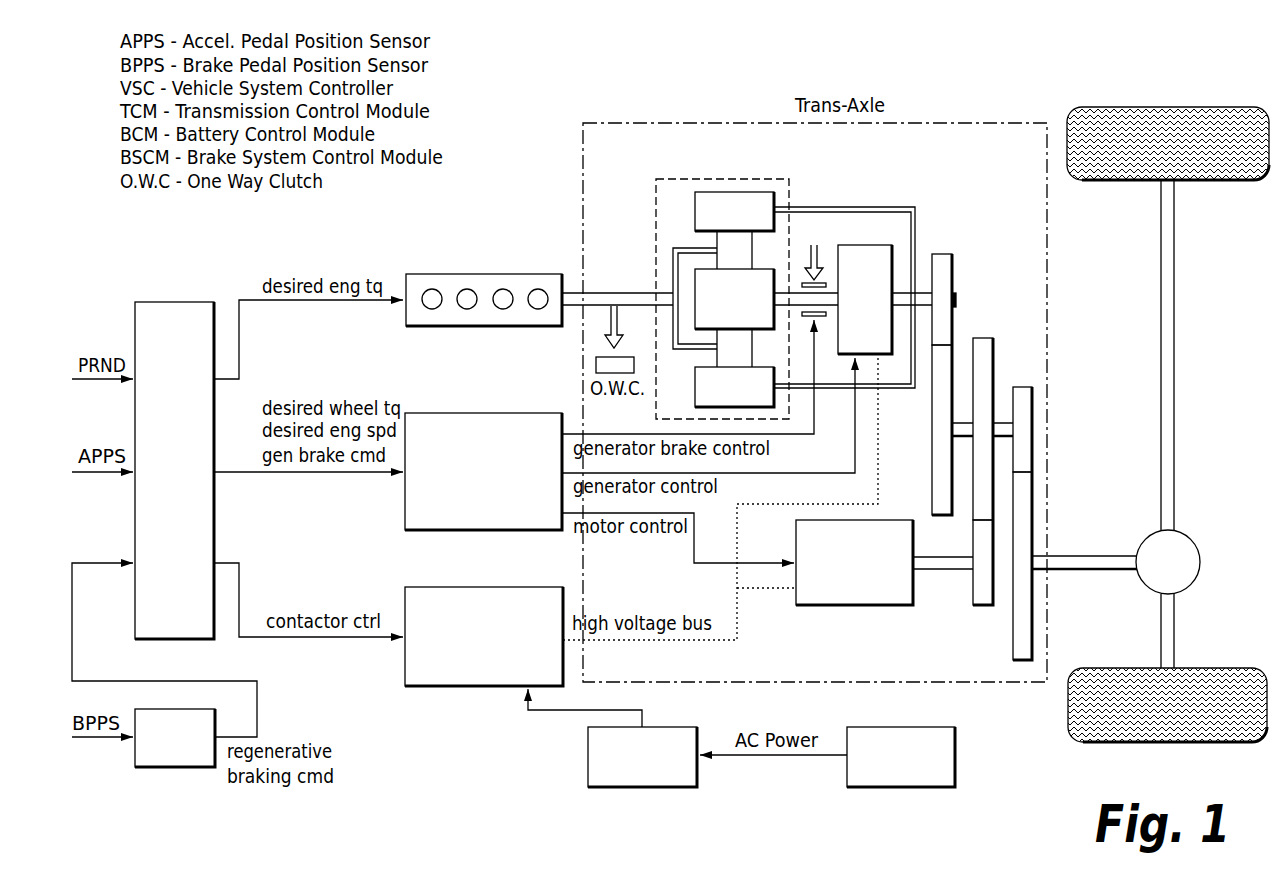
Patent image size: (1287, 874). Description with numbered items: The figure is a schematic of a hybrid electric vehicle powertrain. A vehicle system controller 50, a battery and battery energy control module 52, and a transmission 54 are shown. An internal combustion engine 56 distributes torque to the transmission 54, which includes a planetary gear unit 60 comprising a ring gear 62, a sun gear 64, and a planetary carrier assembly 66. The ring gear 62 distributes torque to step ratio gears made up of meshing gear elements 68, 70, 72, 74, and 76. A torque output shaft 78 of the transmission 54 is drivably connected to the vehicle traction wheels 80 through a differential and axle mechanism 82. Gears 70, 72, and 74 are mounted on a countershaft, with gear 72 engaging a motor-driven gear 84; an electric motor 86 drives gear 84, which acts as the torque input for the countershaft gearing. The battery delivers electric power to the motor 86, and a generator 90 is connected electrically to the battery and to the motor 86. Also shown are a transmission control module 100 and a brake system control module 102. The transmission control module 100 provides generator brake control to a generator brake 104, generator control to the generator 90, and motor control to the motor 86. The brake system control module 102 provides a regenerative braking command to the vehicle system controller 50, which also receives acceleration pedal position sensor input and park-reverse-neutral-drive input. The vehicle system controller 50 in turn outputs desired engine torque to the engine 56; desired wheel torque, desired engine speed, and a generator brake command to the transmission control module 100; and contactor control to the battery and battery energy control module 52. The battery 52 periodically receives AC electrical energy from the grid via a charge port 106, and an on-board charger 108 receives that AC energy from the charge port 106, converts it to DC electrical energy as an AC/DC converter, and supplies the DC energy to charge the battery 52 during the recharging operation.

The vehicle system controller 50 is at (175, 302).
The battery and battery energy control module 52 is at (483, 688).
The transmission 54 is at (928, 123).
The internal combustion engine 56 is at (410, 274).
The planetary gear unit 60 is at (789, 195).
The ring gear 62 is at (695, 210).
The sun gear 64 is at (695, 283).
The planetary carrier assembly 66 is at (686, 248).
The meshing gear element 68 is at (952, 268).
The meshing gear element 70 is at (931, 403).
The meshing gear element 72 is at (993, 355).
The meshing gear element 74 is at (1033, 430).
The meshing gear element 76 is at (1033, 523).
The torque output shaft 78 is at (1090, 573).
The vehicle traction wheels 80 is at (1213, 181).
The differential and axle mechanism 82 is at (1188, 538).
The motor-driven gear 84 is at (973, 588).
The electric motor 86 is at (855, 607).
The generator 90 is at (895, 253).
The transmission control module 100 is at (485, 413).
The brake system control module 102 is at (133, 751).
The generator brake 104 is at (822, 267).
The charge port 106 is at (901, 789).
The on-board charger 108 is at (642, 789).